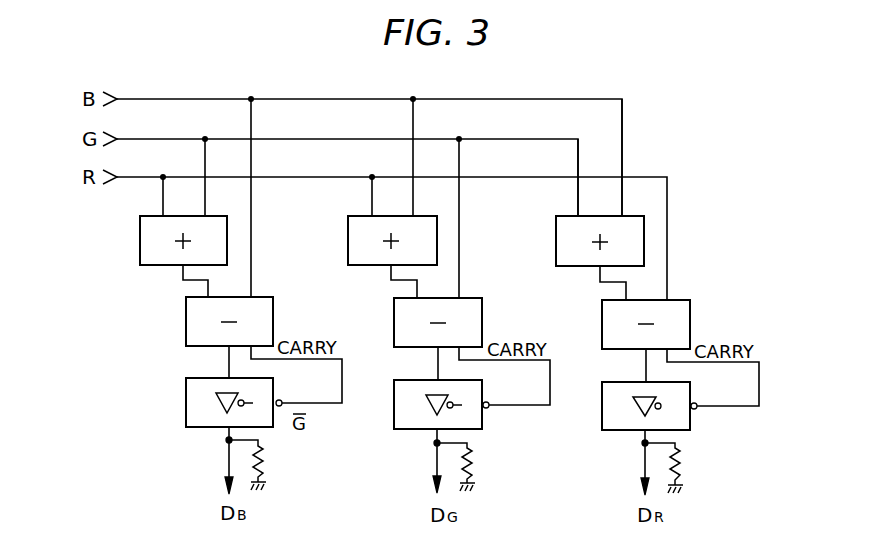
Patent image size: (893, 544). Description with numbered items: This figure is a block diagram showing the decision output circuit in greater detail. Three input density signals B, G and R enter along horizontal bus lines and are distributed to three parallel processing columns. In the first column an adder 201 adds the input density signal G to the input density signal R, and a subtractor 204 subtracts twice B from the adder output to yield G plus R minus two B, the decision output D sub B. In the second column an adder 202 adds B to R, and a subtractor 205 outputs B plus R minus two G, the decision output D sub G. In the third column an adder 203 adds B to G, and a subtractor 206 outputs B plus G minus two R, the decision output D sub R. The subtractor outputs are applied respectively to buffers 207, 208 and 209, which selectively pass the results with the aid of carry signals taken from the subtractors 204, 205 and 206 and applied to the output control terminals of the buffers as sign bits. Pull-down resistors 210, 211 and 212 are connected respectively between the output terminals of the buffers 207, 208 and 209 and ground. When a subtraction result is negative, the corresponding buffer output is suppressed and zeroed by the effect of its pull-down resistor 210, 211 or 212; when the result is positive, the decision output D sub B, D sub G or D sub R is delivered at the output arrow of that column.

The adder 201 is at (139, 243).
The adder 202 is at (347, 243).
The adder 203 is at (556, 245).
The subtractor 204 is at (186, 325).
The subtractor 205 is at (394, 325).
The subtractor 206 is at (602, 327).
The buffer 207 is at (186, 405).
The buffer 208 is at (394, 410).
The buffer 209 is at (602, 405).
The pull-down resistor 210 is at (268, 460).
The pull-down resistor 211 is at (476, 462).
The pull-down resistor 212 is at (683, 464).